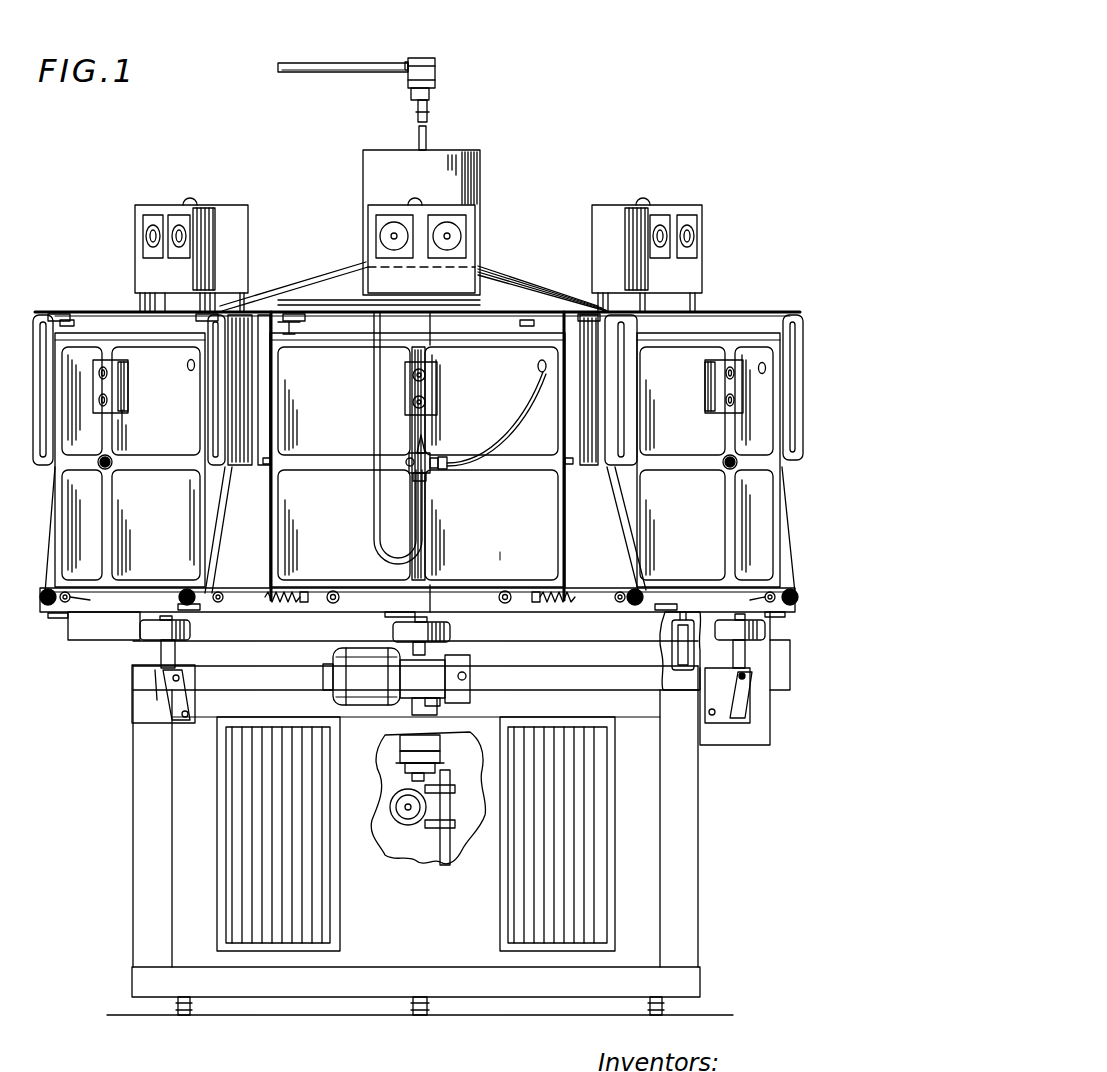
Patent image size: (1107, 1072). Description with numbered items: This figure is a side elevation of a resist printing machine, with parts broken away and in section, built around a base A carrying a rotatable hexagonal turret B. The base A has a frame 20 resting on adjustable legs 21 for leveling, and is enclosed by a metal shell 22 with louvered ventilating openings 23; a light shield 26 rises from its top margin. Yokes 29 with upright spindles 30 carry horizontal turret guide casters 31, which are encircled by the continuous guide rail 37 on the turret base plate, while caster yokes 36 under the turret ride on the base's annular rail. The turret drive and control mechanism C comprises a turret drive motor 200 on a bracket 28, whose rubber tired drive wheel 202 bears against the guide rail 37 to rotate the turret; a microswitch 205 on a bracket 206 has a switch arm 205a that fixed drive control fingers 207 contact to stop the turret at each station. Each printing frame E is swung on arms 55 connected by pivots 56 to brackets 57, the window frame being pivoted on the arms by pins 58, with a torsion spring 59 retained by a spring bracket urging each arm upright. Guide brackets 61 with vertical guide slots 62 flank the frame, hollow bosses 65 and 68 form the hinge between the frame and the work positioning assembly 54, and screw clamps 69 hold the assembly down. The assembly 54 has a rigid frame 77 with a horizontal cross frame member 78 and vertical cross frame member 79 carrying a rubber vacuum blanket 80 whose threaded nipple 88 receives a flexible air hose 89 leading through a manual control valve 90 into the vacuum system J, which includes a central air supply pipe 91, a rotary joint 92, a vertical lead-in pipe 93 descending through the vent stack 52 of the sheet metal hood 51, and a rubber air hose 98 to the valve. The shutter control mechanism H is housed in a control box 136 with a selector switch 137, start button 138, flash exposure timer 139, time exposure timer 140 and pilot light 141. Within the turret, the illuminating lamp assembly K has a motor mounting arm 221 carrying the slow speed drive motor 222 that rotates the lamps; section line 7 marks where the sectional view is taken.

The frame 20 is at (702, 982).
The adjustable legs 21 is at (192, 1008).
The metal shell 22 is at (416, 818).
The louvered ventilating openings 23 is at (238, 790).
The light shield 26 is at (135, 680).
The bracket 28 is at (447, 702).
The yokes 29 is at (182, 706).
The upright spindles 30 is at (160, 655).
The horizontal turret guide casters 31 is at (145, 636).
The caster yokes 36 is at (683, 612).
The guide rail 37 is at (82, 642).
The sheet metal hood 51 is at (488, 267).
The vent stack 52 is at (482, 174).
The work positioning assembly 54 is at (472, 478).
The arms 55 is at (50, 540).
The pivots 56 is at (72, 598).
The brackets 57 is at (228, 612).
The pins 58 is at (272, 466).
The torsion spring 59 is at (48, 592).
The guide brackets 61 is at (43, 314).
The vertical guide slot 62 is at (50, 440).
The hollow bosses 65 is at (72, 318).
The hollow bosses 68 is at (60, 312).
The screw clamps 69 is at (339, 597).
The rigid frame 77 is at (560, 508).
The horizontal cross frame member 78 is at (505, 472).
The vertical cross frame member 79 is at (428, 440).
The rubber vacuum blanket 80 is at (417, 463).
The threaded nipple 88 is at (187, 366).
The flexible air hose 89 is at (516, 403).
The manual control valve 90 is at (112, 464).
The central air supply pipe 91 is at (338, 48).
The rotary joint 92 is at (426, 58).
The vertical lead-in pipe 93 is at (432, 112).
The rubber air hose 98 is at (372, 388).
The control box 136 is at (138, 210).
The selector switch 137 is at (108, 400).
The start button 138 is at (108, 373).
The flash exposure timer 139 is at (470, 218).
The time exposure timer 140 is at (378, 218).
The pilot light 141 is at (190, 204).
The turret drive motor 200 is at (375, 700).
The rubber tired drive wheel 202 is at (452, 631).
The microswitch 205 is at (780, 692).
The switch arm 205a is at (770, 635).
The bracket 206 is at (730, 746).
The drive control finger 207 is at (62, 618).
The motor mounting arm 221 is at (476, 848).
The drive motor 222 is at (404, 828).
The section line 7 is at (440, 326).
The base A is at (122, 791).
The hexagonal turret B is at (305, 274).
The turret drive and drive control mechanism C is at (312, 659).
The printing frame E is at (417, 460).
The control mechanism H is at (218, 212).
The vacuum system J is at (445, 70).
The illuminating lamp assembly K is at (388, 759).